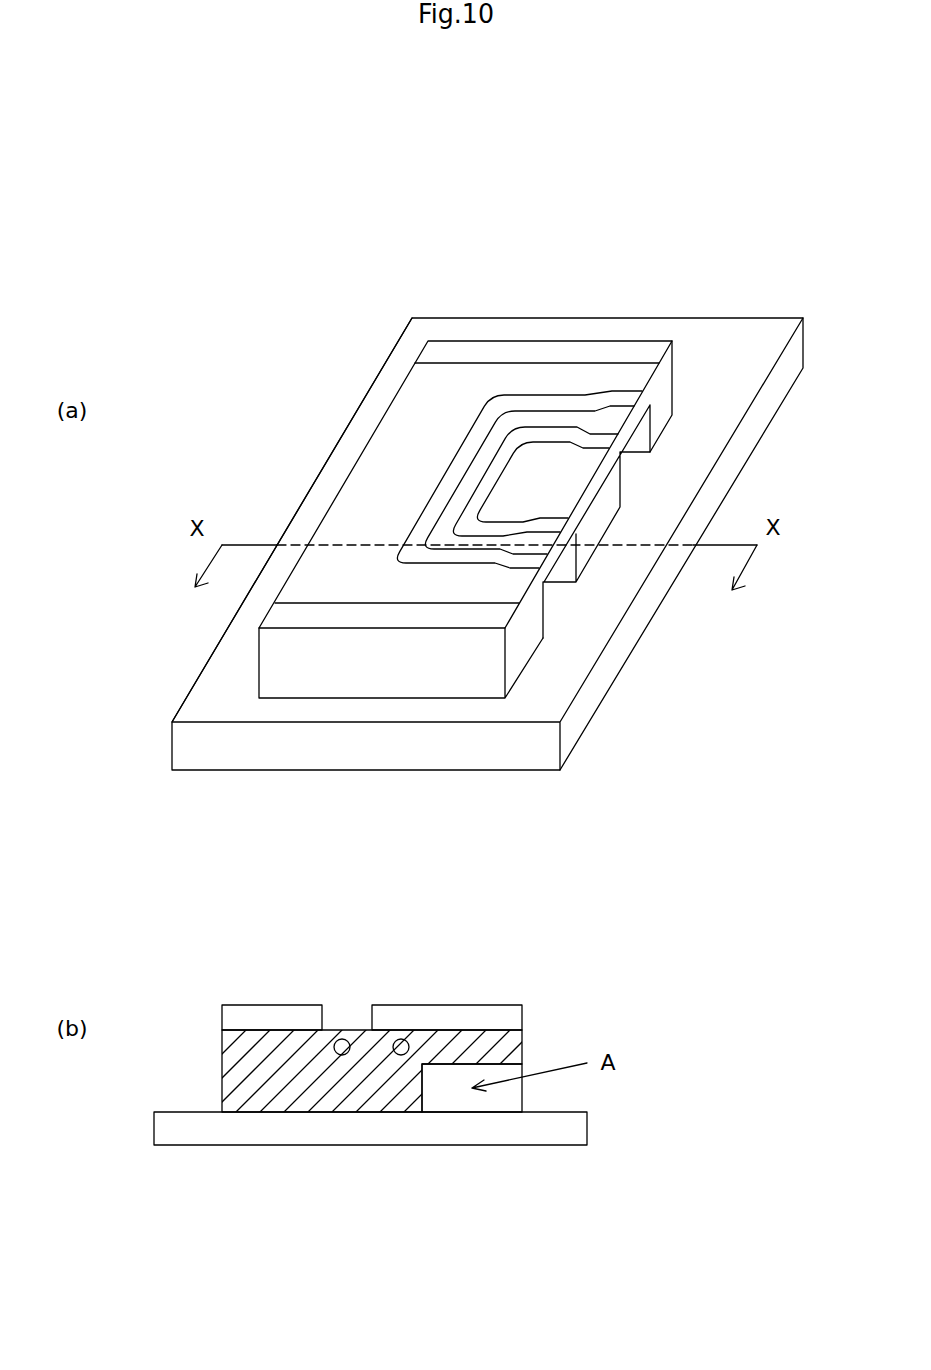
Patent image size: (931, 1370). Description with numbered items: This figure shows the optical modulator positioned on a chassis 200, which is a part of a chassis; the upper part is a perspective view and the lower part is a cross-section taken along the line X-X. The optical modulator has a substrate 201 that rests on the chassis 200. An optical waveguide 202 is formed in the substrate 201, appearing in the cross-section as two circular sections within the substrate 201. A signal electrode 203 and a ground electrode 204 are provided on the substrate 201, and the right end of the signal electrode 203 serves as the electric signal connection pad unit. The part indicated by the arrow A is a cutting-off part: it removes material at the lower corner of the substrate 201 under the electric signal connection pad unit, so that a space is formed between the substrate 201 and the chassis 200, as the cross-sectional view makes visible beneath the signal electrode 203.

The chassis 200 is at (722, 380).
The substrate 201 is at (387, 655).
The optical waveguide 202 is at (343, 1055).
The signal electrode 203 is at (478, 467).
The ground electrode 204 is at (552, 460).